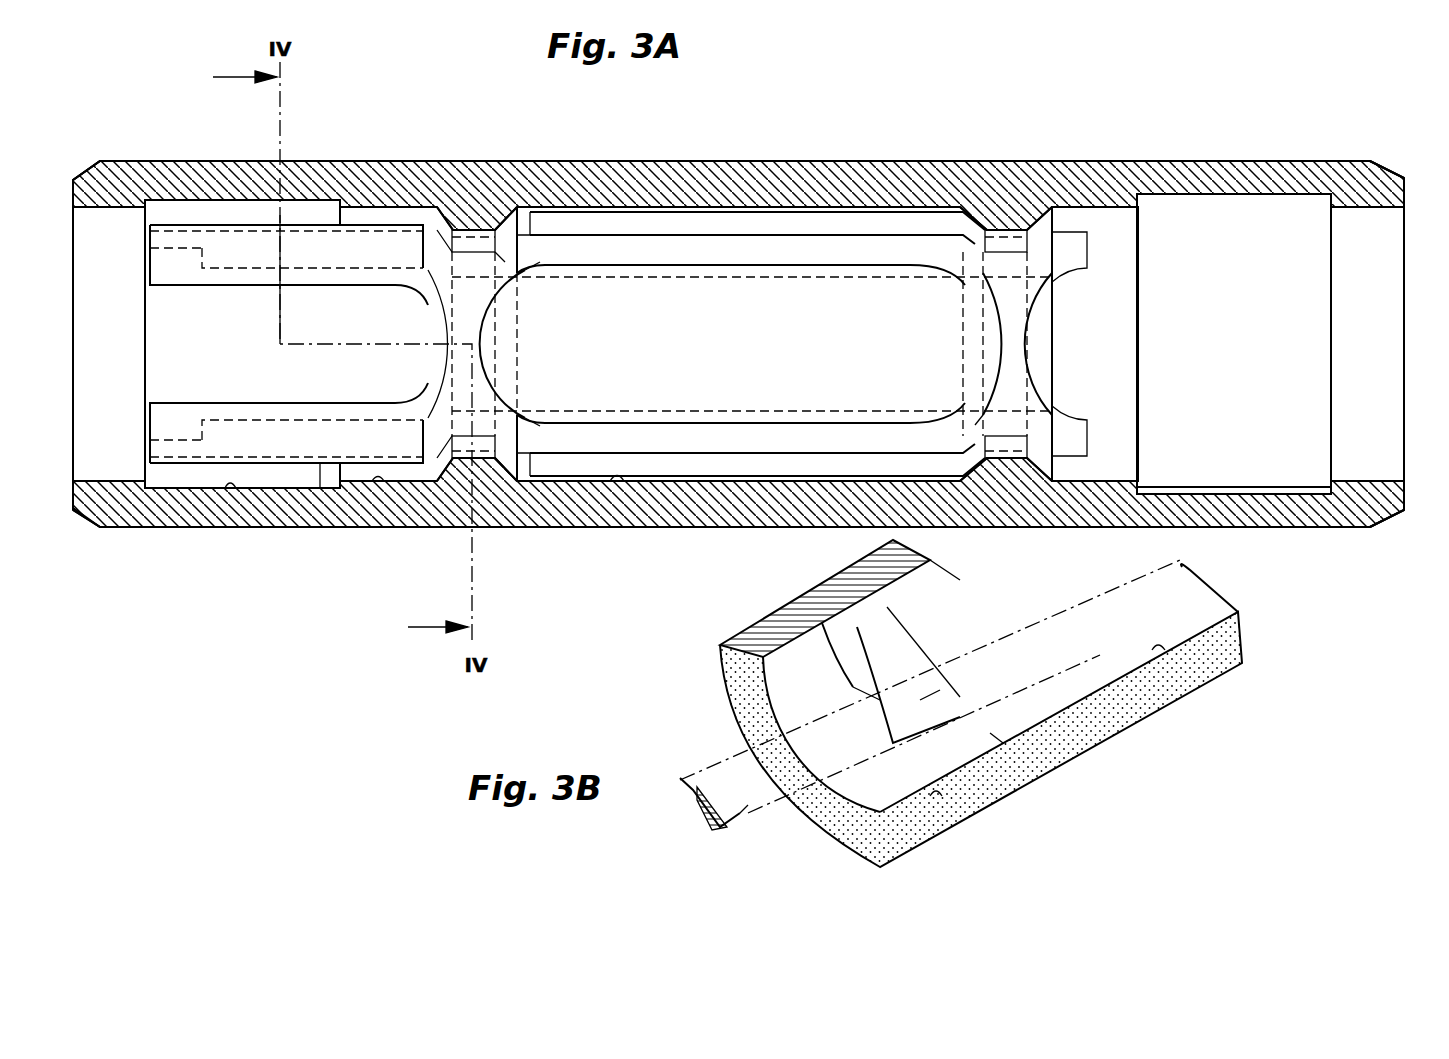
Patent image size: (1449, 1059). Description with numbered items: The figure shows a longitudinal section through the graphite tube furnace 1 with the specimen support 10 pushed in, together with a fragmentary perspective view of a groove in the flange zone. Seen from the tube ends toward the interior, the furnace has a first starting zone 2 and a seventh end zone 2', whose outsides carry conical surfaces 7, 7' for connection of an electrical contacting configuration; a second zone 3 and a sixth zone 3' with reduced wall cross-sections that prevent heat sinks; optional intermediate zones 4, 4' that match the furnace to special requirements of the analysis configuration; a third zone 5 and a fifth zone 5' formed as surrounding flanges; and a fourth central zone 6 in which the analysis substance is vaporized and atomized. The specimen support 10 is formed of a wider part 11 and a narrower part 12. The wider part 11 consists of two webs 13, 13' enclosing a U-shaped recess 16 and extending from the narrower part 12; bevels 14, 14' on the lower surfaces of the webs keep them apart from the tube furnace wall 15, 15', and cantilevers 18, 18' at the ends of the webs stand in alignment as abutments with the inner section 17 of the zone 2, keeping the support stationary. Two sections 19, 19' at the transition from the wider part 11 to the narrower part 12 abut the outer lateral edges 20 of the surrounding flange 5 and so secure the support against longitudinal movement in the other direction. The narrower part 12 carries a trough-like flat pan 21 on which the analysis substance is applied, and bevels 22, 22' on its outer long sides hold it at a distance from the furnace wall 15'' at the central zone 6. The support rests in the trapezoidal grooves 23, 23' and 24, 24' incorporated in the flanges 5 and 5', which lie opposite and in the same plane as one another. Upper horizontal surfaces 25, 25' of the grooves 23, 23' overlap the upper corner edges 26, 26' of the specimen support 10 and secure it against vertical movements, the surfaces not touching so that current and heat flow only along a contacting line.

In FIG. 3A, the graphite tube furnace 1 is at (952, 162).
In FIG. 3B, the graphite tube furnace 1 is at (1166, 742).
In FIG. 3A, the first starting zone 2 is at (109, 162).
In FIG. 3A, the seventh end zone 2' is at (1388, 225).
In FIG. 3A, the second zone 3 is at (300, 148).
In FIG. 3A, the sixth zone 3' is at (1254, 148).
In FIG. 3A, the intermediate zone 4 is at (388, 158).
In FIG. 3A, the intermediate zone 4' is at (1094, 160).
In FIG. 3A, the third zone 5 is at (477, 341).
In FIG. 3B, the third zone 5 is at (874, 685).
In FIG. 3A, the fifth zone 5' is at (1006, 341).
In FIG. 3A, the fourth central zone 6 is at (718, 506).
In FIG. 3B, the fourth central zone 6 is at (1114, 726).
In FIG. 3A, the conical surface 7 is at (81, 342).
In FIG. 3A, the conical surface 7' is at (1389, 334).
In FIG. 3A, the specimen support 10 is at (772, 456).
In FIG. 3B, the specimen support 10 is at (1022, 613).
In FIG. 3A, the wider part 11 is at (298, 212).
In FIG. 3A, the narrower part 12 is at (806, 230).
In FIG. 3A, the web 13 is at (263, 305).
In FIG. 3B, the web 13 is at (702, 777).
In FIG. 3A, the web 13' is at (337, 515).
In FIG. 3A, the bevel 14 is at (312, 187).
In FIG. 3B, the bevel 14 is at (684, 814).
In FIG. 3A, the bevel 14' is at (312, 496).
In FIG. 3A, the tube furnace wall 15 is at (240, 528).
In FIG. 3A, the tube furnace wall 15' is at (389, 525).
In FIG. 3B, the tube furnace wall 15' is at (951, 828).
In FIG. 3A, the furnace wall 15'' is at (628, 525).
In FIG. 3B, the furnace wall 15'' is at (1191, 689).
In FIG. 3A, the U-shaped recess 16 is at (212, 290).
In FIG. 3B, the U-shaped recess 16 is at (740, 810).
In FIG. 3A, the inner section 17 is at (150, 212).
In FIG. 3A, the cantilever 18 is at (146, 239).
In FIG. 3A, the cantilever 18' is at (145, 441).
In FIG. 3A, the section 19 is at (733, 184).
In FIG. 3B, the section 19 is at (831, 680).
In FIG. 3A, the section 19' is at (726, 504).
In FIG. 3A, the outer lateral edge 20 is at (432, 282).
In FIG. 3B, the outer lateral edge 20 is at (822, 655).
In FIG. 3A, the flat pan 21 is at (726, 352).
In FIG. 3B, the flat pan 21 is at (1032, 632).
In FIG. 3A, the bevel 22 is at (621, 191).
In FIG. 3A, the bevel 22' is at (613, 505).
In FIG. 3A, the trapezoidal groove 23 is at (559, 181).
In FIG. 3B, the trapezoidal groove 23 is at (960, 686).
In FIG. 3A, the trapezoidal groove 23' is at (547, 507).
In FIG. 3A, the trapezoidal groove 24 is at (973, 340).
In FIG. 3A, the trapezoidal groove 24' is at (941, 394).
In FIG. 3A, the upper horizontal surface 25 is at (538, 344).
In FIG. 3B, the upper horizontal surface 25 is at (882, 671).
In FIG. 3A, the upper horizontal surface 25' is at (565, 396).
In FIG. 3A, the upper corner edge 26 is at (532, 266).
In FIG. 3B, the upper corner edge 26 is at (942, 605).
In FIG. 3A, the upper corner edge 26' is at (500, 257).